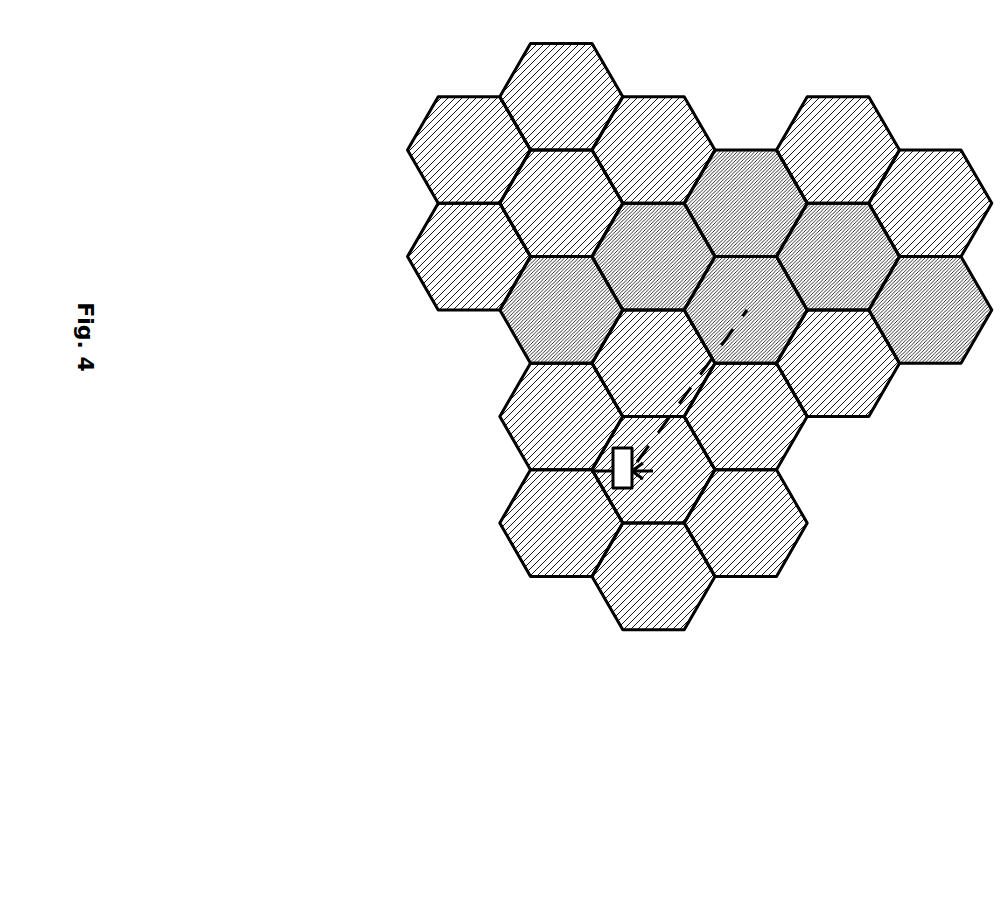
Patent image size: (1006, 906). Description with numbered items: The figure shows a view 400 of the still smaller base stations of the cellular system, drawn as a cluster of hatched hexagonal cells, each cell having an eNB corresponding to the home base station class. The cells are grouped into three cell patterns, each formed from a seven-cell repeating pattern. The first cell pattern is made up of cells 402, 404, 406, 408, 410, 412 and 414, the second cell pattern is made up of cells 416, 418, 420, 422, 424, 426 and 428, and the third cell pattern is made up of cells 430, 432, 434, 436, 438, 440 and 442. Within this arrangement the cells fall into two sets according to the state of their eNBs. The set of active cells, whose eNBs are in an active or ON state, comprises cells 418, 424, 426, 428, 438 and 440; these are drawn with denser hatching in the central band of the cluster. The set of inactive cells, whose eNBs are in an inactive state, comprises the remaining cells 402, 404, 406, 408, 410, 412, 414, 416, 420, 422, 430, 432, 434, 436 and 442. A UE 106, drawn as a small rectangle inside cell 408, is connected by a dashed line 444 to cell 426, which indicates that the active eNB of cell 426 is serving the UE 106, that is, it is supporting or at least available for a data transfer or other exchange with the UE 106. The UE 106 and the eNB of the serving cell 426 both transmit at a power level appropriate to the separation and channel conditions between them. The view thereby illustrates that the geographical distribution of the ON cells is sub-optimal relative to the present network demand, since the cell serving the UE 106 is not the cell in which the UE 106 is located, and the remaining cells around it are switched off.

The view 400 is at (700, 432).
The cell 402 is at (653, 576).
The cell 404 is at (745, 523).
The cell 406 is at (745, 416).
The cell 408 is at (653, 470).
The cell 410 is at (653, 363).
The cell 412 is at (561, 416).
The cell 414 is at (561, 523).
The cell 416 is at (838, 363).
The cell 418 is at (930, 310).
The cell 420 is at (930, 203).
The cell 422 is at (838, 150).
The cell 424 is at (745, 203).
The cell 426 is at (745, 310).
The cell 428 is at (838, 256).
The cell 430 is at (653, 150).
The cell 432 is at (561, 96).
The cell 434 is at (469, 150).
The cell 436 is at (469, 256).
The cell 438 is at (561, 310).
The cell 440 is at (653, 256).
The cell 442 is at (561, 203).
The dashed line 444 is at (688, 392).
The UE 106 is at (598, 485).